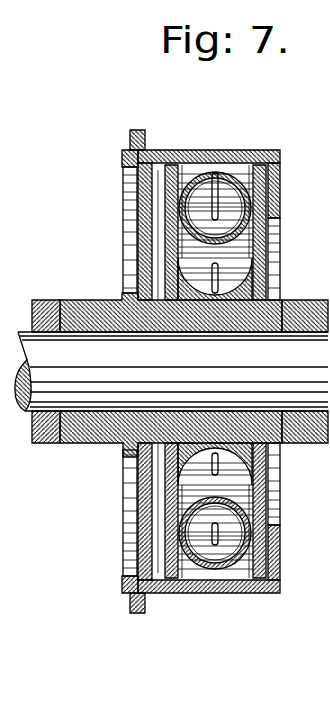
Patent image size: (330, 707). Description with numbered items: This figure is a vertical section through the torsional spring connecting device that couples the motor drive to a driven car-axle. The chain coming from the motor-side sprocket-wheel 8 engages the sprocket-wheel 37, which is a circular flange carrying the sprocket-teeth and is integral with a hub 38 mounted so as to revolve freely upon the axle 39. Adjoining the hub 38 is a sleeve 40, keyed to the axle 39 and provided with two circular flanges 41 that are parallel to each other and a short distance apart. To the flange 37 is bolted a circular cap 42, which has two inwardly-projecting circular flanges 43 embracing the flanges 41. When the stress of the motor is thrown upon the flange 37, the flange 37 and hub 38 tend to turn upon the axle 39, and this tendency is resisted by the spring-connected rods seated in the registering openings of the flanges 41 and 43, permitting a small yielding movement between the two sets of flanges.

The sprocket-wheel 8 is at (216, 668).
The sprocket-wheel 37 is at (121, 165).
The hub 38 is at (92, 300).
The axle 39 is at (19, 413).
The sleeve 40 is at (283, 300).
The circular flanges 41 is at (178, 160).
The circular cap 42 is at (266, 148).
The inwardly-projecting circular flanges 43 is at (121, 211).